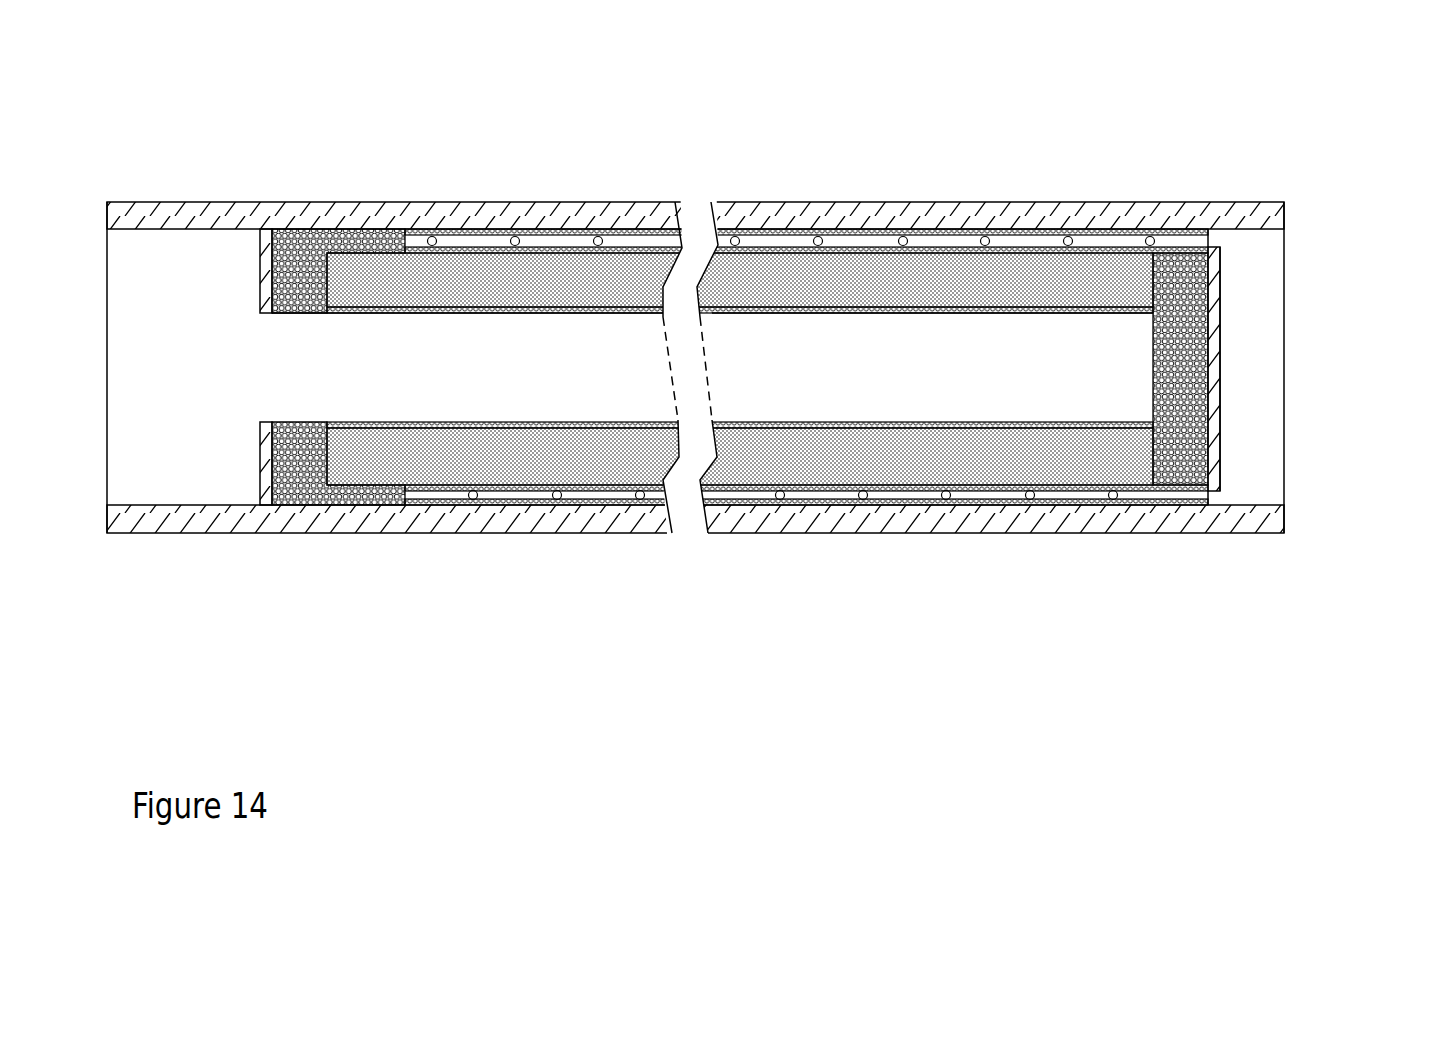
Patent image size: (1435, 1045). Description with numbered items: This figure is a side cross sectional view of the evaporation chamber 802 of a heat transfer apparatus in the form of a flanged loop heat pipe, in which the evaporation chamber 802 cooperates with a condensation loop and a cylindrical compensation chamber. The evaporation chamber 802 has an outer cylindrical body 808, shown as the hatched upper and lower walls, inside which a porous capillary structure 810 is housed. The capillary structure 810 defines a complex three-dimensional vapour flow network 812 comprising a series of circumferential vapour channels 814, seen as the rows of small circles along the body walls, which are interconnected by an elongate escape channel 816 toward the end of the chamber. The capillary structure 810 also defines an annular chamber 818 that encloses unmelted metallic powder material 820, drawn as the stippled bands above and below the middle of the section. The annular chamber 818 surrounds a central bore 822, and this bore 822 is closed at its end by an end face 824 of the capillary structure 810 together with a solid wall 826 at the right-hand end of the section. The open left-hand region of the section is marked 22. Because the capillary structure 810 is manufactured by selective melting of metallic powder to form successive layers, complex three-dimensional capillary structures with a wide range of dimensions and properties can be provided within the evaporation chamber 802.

The flow passage 22 is at (273, 378).
The evaporation chamber 802 is at (197, 631).
The outer cylindrical body 808 is at (227, 215).
The porous capillary structure 810 is at (295, 287).
The 3D vapour flow network 812 is at (583, 490).
The circumferential vapour channels 814 is at (780, 498).
The elongate escape channel 816 is at (1220, 493).
The annular chamber 818 is at (563, 423).
The unmelted metallic powder material 820 is at (835, 287).
The central bore 822 is at (1070, 340).
The end face 824 is at (1180, 270).
The solid wall 826 is at (1222, 384).